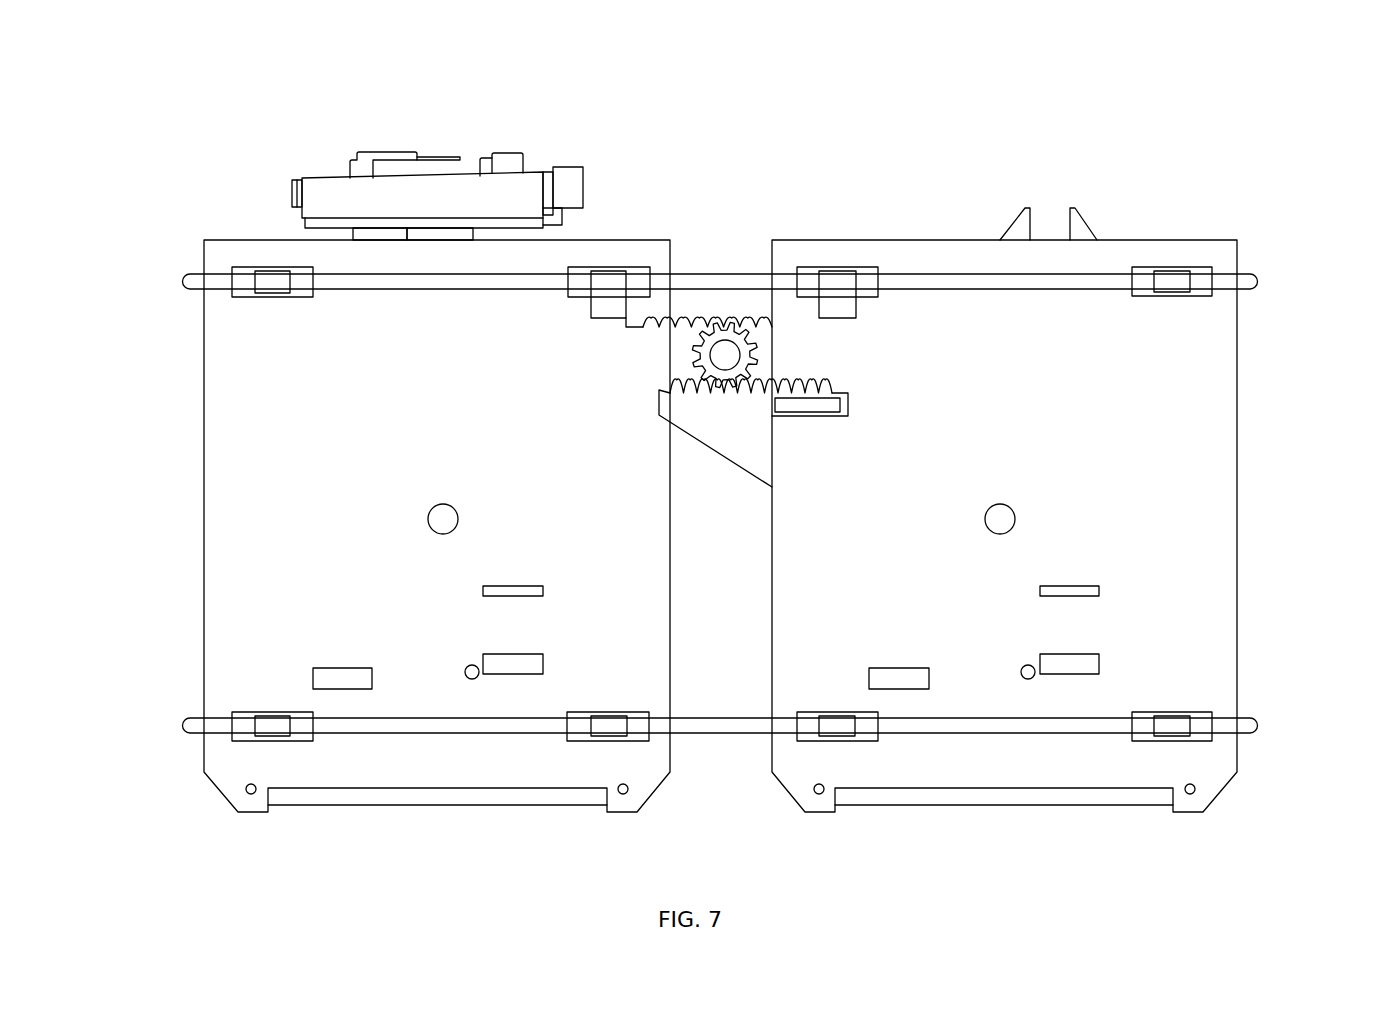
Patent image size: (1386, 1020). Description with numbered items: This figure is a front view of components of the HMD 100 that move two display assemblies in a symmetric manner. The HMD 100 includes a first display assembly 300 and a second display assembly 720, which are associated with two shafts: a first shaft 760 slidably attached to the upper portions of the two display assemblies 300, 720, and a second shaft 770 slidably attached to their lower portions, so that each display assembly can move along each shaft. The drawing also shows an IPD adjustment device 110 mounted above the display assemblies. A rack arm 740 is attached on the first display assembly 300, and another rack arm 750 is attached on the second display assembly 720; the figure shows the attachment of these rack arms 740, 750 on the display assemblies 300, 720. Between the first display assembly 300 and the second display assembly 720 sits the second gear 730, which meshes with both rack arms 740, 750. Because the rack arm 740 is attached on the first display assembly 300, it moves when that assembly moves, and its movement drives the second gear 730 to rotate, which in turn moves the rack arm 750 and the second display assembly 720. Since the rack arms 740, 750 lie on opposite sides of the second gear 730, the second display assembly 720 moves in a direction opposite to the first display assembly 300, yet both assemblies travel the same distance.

The HMD 100 is at (718, 443).
The IPD adjustment device 110 is at (457, 202).
The first shaft 760 is at (728, 284).
The second shaft 770 is at (727, 722).
The rack arm 740 is at (658, 330).
The rack arm 750 is at (663, 385).
The second gear 730 is at (720, 355).
The second display assembly 720 is at (262, 443).
The first display assembly 300 is at (1187, 473).